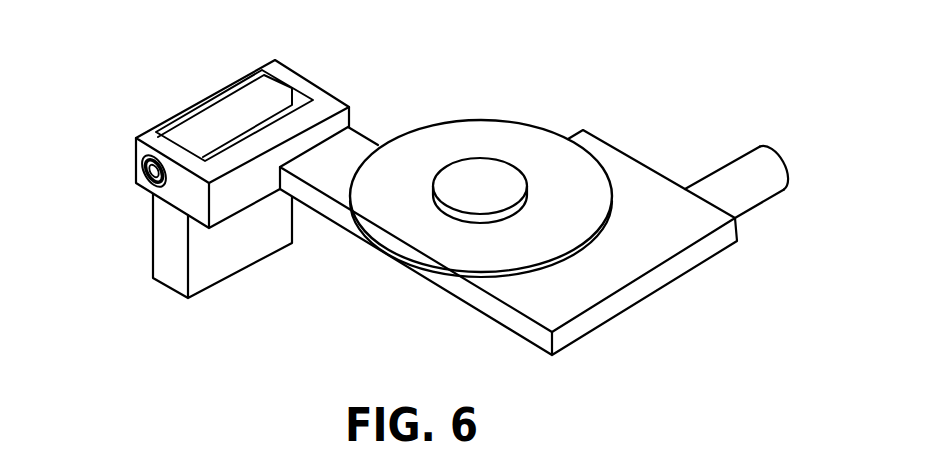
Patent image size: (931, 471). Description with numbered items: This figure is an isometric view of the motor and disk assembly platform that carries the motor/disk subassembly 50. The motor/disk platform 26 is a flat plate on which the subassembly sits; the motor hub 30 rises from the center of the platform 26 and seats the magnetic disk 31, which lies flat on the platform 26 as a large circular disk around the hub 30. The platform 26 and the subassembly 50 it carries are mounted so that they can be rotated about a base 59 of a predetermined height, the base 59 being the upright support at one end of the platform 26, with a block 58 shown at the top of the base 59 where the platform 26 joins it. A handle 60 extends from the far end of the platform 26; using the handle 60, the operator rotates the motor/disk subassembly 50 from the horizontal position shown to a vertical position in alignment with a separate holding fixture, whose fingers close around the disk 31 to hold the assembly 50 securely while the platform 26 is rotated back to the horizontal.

The motor/disk platform 26 is at (676, 268).
The motor hub 30 is at (482, 173).
The magnetic disk 31 is at (568, 180).
The motor/disk subassembly 50 is at (438, 194).
The clamp block 58 is at (325, 107).
The base 59 is at (173, 241).
The handle 60 is at (750, 173).